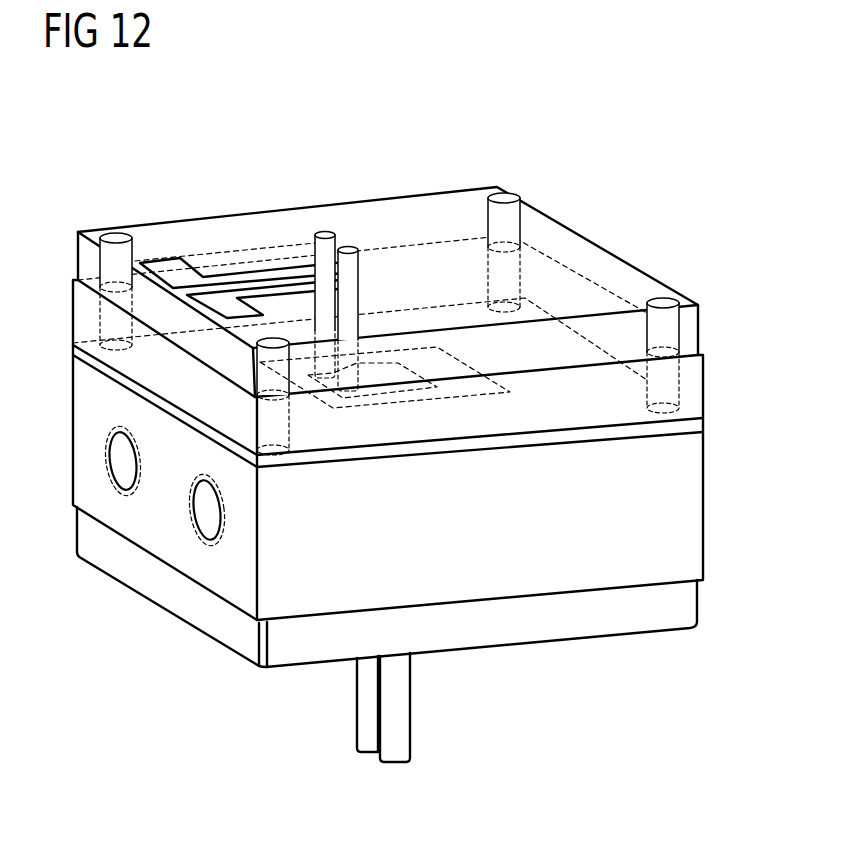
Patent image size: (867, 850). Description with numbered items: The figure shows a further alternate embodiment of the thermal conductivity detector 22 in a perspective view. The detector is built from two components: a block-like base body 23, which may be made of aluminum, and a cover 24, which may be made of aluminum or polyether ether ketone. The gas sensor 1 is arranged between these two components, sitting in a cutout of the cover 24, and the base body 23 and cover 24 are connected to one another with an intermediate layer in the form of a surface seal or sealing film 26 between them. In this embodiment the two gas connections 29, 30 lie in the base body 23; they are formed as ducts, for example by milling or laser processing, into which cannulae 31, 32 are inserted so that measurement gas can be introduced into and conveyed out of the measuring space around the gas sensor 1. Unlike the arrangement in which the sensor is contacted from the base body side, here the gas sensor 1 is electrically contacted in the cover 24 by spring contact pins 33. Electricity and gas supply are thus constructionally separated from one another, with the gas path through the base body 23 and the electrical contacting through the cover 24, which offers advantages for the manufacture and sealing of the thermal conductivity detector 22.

The gas sensor 1 is at (418, 376).
The thermal conductivity detector 22 is at (230, 162).
The base body 23 is at (693, 515).
The cover 24 is at (688, 325).
The sealing film 26 is at (702, 420).
The gas connection 29 is at (314, 704).
The gas connection 30 is at (452, 707).
The cannula 31 is at (367, 715).
The cannula 32 is at (398, 723).
The spring contact pins 33 is at (322, 233).